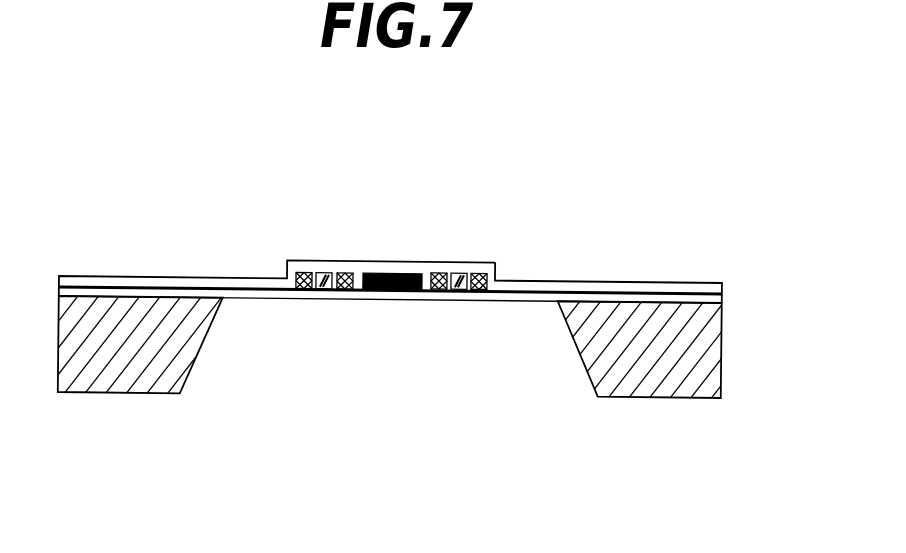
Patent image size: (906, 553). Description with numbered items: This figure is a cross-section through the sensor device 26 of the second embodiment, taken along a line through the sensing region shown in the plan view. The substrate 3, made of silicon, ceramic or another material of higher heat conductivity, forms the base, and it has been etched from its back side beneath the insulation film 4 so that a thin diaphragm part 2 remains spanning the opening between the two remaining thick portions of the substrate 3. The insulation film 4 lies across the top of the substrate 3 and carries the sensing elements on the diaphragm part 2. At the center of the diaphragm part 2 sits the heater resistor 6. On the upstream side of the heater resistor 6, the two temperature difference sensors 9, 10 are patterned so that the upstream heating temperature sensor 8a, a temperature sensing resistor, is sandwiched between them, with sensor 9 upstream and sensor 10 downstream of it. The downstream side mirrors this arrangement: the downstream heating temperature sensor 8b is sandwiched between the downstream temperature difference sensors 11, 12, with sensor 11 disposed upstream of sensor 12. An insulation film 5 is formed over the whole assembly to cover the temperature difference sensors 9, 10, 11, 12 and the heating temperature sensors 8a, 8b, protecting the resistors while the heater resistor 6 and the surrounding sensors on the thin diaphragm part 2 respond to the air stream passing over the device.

The diaphragm part 2 is at (408, 374).
The substrate 3 is at (718, 346).
The insulation film 4 is at (725, 291).
The insulation film 5 is at (727, 276).
The heater resistor 6 is at (387, 282).
The heating temperature sensor 8a is at (322, 282).
The heating temperature sensor 8b is at (453, 281).
The temperature difference sensor 9 is at (348, 274).
The temperature difference sensor 10 is at (345, 281).
The temperature difference sensor 11 is at (477, 273).
The temperature difference sensor 12 is at (479, 281).
The sensor device 26 is at (110, 272).